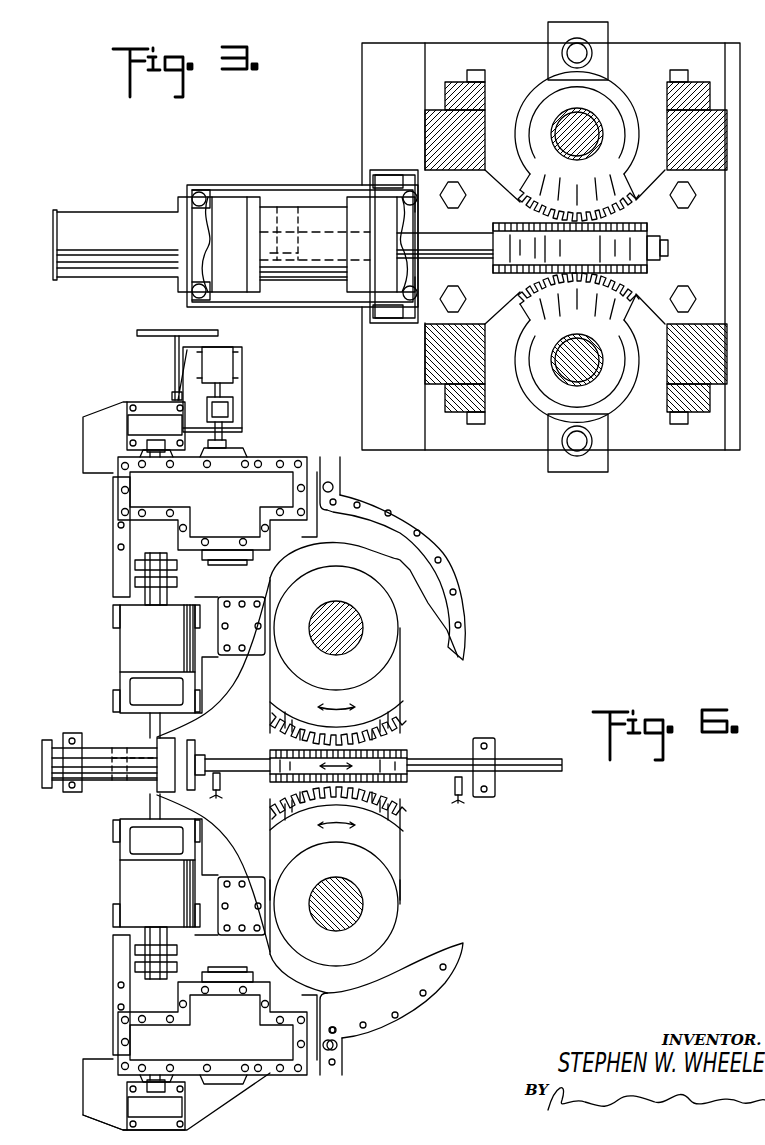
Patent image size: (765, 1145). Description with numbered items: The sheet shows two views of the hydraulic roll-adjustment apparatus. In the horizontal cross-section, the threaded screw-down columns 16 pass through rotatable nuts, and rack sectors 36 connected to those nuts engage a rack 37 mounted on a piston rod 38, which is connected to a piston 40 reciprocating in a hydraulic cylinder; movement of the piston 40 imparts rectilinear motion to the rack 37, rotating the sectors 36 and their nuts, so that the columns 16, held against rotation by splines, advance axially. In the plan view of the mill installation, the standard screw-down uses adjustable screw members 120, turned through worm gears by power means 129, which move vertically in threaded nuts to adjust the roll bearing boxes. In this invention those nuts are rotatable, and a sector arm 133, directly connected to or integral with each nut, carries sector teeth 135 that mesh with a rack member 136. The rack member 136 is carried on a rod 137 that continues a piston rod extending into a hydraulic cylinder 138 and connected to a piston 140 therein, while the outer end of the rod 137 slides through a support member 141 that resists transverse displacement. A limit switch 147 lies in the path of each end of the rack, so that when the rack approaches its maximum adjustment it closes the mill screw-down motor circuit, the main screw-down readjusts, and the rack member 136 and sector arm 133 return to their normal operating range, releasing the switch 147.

In FIG. 3, the screw-down column 16 is at (585, 128).
In FIG. 3, the rack sector 36 is at (620, 193).
In FIG. 3, the rack 37 is at (598, 258).
In FIG. 3, the piston rod 38 is at (322, 238).
In FIG. 3, the piston 40 is at (288, 222).
In FIG. 6, the adjustable screw member 120 is at (353, 636).
In FIG. 6, the power means 129 is at (96, 597).
In FIG. 6, the sector arm 133 is at (396, 684).
In FIG. 6, the sector teeth 135 is at (405, 800).
In FIG. 6, the rack member 136 is at (395, 763).
In FIG. 6, the rod 137 is at (230, 757).
In FIG. 6, the hydraulic cylinder 138 is at (95, 735).
In FIG. 6, the piston 140 is at (122, 785).
In FIG. 6, the support member 141 is at (484, 738).
In FIG. 6, the limit switch 147 is at (222, 785).